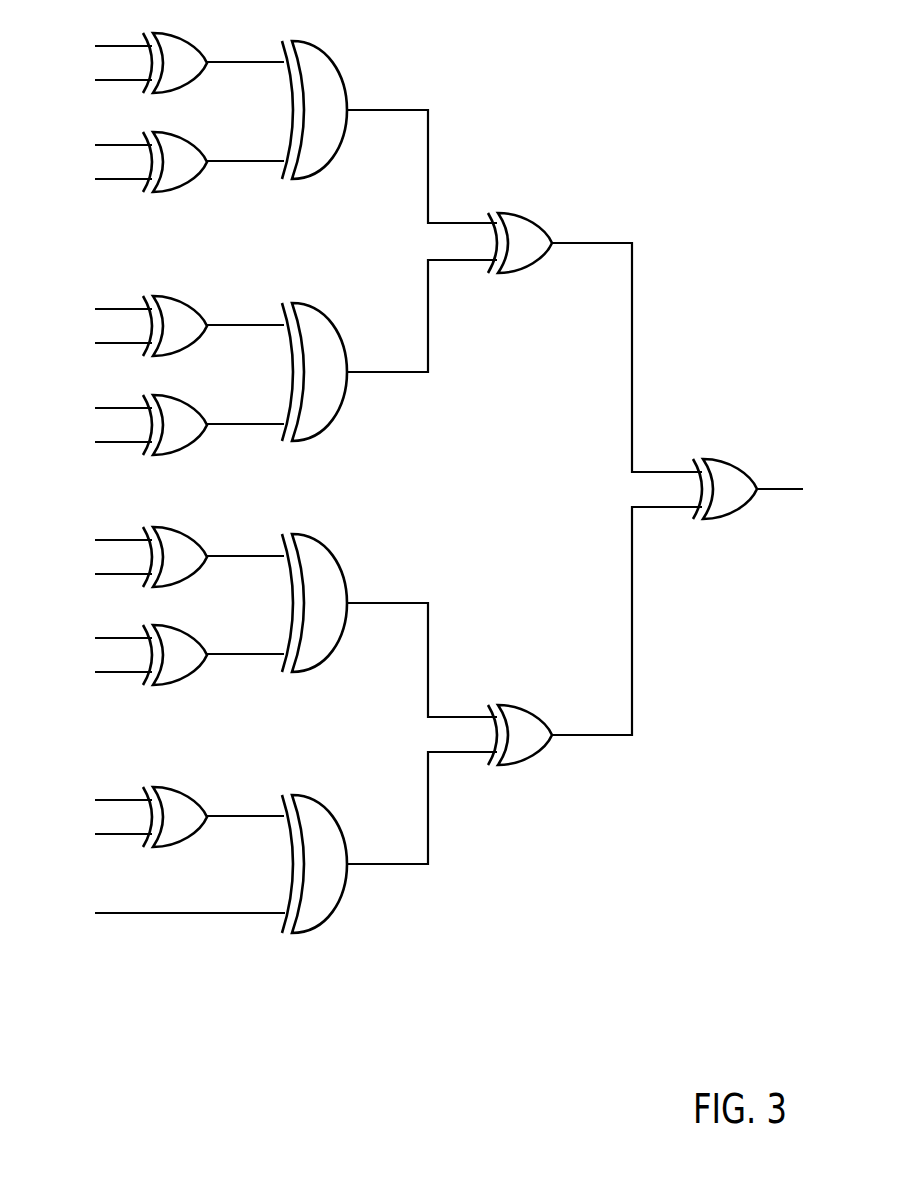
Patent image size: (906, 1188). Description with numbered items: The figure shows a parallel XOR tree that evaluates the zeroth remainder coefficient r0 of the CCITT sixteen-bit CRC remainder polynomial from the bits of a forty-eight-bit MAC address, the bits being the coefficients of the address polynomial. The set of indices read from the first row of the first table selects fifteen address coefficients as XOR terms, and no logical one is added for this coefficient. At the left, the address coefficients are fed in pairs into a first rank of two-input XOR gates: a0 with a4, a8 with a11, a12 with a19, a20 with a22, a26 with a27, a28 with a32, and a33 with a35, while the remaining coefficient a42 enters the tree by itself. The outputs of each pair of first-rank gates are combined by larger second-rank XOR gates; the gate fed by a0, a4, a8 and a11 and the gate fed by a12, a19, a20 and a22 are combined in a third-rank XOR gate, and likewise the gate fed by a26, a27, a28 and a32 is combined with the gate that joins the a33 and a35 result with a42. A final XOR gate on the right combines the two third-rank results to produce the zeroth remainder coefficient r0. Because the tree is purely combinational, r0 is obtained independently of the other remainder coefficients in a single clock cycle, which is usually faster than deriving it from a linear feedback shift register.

The address coefficient a0 is at (108, 46).
The address coefficient a4 is at (108, 80).
The address coefficient a8 is at (108, 145).
The address coefficient a11 is at (103, 179).
The address coefficient a12 is at (103, 309).
The address coefficient a19 is at (103, 343).
The address coefficient a20 is at (103, 408).
The address coefficient a22 is at (103, 442).
The address coefficient a26 is at (103, 540).
The address coefficient a27 is at (103, 574).
The address coefficient a28 is at (103, 638).
The address coefficient a32 is at (103, 672).
The address coefficient a33 is at (103, 800).
The address coefficient a35 is at (103, 834).
The address coefficient a42 is at (169, 913).
The zeroth remainder coefficient r0 is at (792, 489).